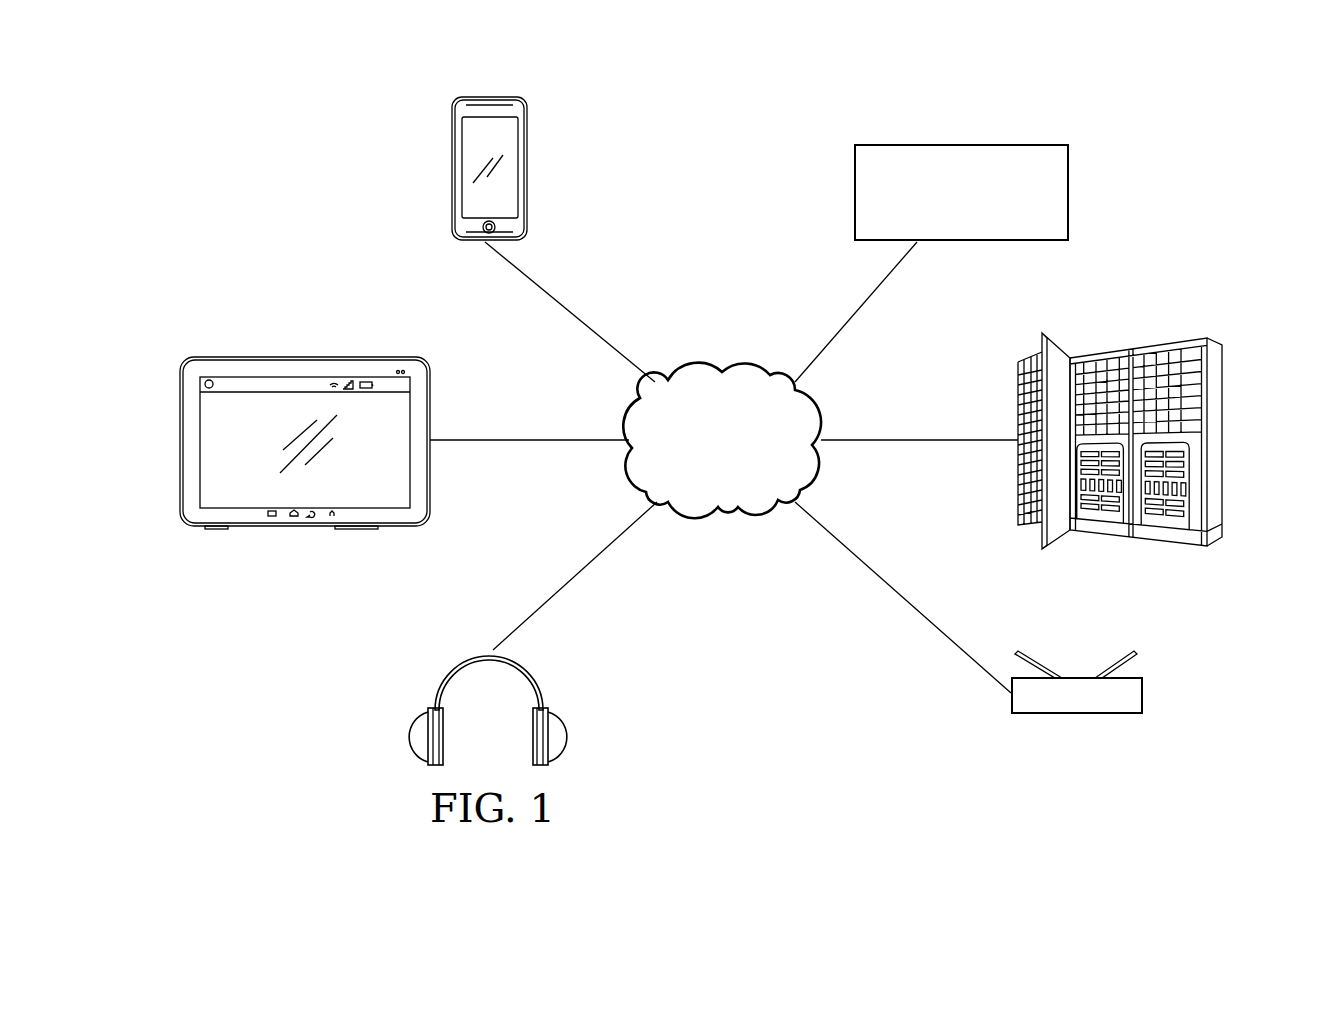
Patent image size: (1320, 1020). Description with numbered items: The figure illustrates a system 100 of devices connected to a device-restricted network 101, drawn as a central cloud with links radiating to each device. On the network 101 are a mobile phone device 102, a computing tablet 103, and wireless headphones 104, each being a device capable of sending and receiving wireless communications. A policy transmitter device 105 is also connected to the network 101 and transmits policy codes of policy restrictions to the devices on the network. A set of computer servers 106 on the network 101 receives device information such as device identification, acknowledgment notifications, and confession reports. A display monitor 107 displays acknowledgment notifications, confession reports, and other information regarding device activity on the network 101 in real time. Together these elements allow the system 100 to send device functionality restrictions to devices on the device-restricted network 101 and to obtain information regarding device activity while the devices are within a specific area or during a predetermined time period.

The system 100 is at (340, 105).
The device-restricted network 101 is at (748, 456).
The mobile phone device 102 is at (452, 170).
The computing tablet 103 is at (180, 465).
The wireless headphones 104 is at (418, 738).
The policy transmitter device 105 is at (1142, 697).
The set of computer servers 106 is at (1221, 465).
The display monitor 107 is at (984, 209).